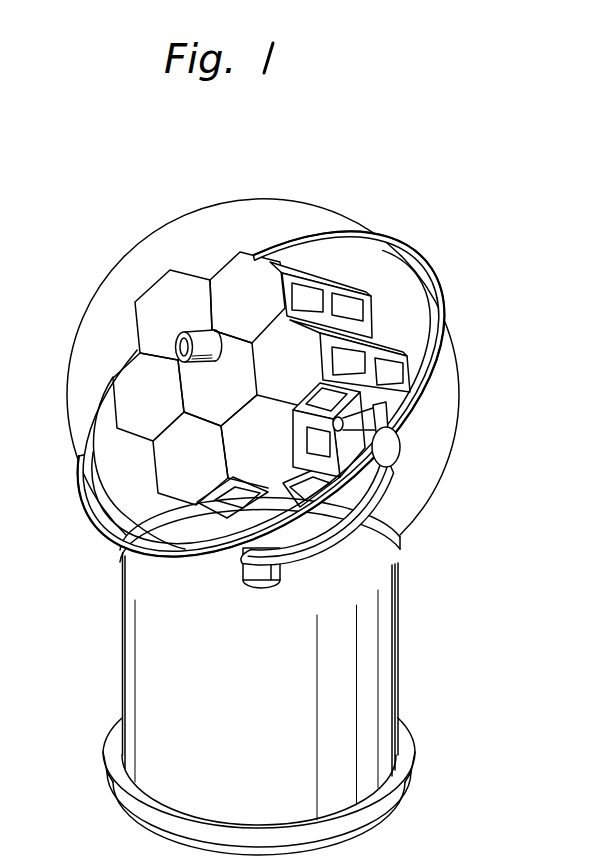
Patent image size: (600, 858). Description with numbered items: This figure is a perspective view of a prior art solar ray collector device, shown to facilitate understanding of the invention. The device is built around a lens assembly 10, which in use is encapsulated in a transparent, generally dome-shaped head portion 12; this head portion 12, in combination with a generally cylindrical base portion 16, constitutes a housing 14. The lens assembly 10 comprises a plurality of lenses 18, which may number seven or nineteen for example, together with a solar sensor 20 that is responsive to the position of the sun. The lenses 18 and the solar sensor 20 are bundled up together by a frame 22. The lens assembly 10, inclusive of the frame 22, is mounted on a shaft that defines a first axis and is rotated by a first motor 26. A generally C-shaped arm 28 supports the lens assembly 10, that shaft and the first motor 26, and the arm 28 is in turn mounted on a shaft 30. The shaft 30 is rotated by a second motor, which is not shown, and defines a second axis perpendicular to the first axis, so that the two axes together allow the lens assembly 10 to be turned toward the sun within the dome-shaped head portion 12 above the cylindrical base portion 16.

The lens assembly 10 is at (247, 393).
The head portion 12 is at (347, 216).
The housing 14 is at (67, 438).
The base portion 16 is at (123, 648).
The lenses 18 is at (186, 276).
The solar sensor 20 is at (203, 362).
The frame 22 is at (323, 275).
The first motor 26 is at (398, 451).
The C-shaped arm 28 is at (357, 521).
The shaft 30 is at (243, 578).